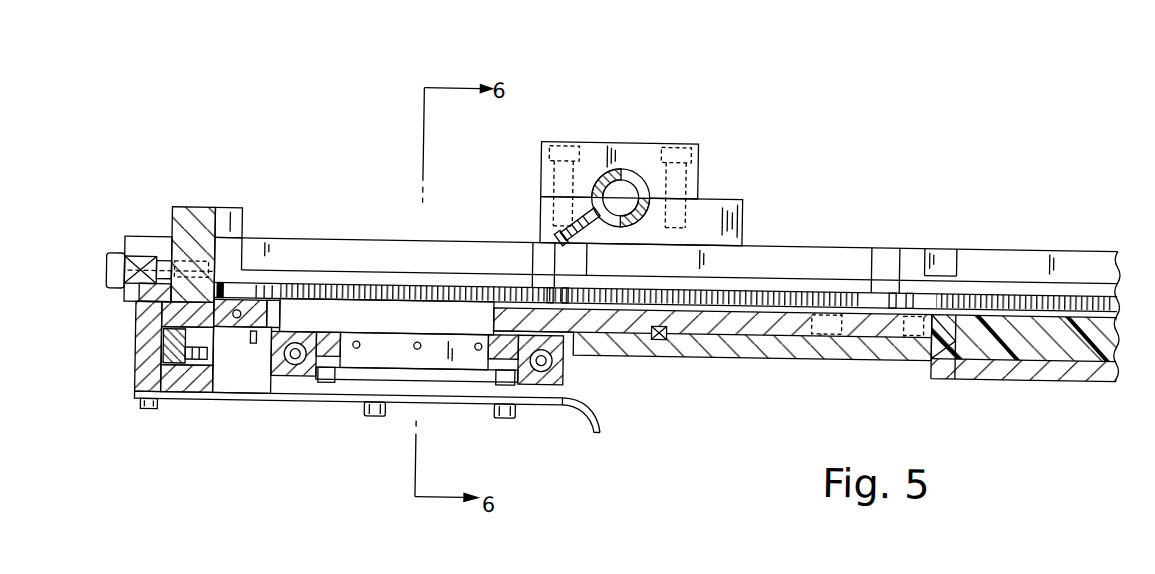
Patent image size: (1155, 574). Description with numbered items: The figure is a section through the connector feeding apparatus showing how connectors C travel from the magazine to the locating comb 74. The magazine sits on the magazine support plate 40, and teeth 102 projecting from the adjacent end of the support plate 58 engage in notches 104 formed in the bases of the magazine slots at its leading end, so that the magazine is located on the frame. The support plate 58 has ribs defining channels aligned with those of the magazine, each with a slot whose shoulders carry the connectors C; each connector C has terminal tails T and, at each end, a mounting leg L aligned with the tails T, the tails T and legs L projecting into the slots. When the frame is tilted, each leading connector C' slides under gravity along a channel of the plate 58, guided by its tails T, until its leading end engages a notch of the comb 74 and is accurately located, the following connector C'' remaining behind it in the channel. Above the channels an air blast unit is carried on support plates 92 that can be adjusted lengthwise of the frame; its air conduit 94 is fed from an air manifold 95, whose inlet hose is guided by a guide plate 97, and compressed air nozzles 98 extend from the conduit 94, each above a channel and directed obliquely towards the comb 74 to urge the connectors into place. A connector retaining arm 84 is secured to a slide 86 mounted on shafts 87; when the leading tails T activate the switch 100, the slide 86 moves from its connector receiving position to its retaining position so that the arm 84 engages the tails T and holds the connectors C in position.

The magazine support plate 40 is at (1047, 364).
The support plate 58 is at (772, 322).
The connector locating comb 74 is at (193, 212).
The connector retaining arm 84 is at (430, 326).
The slide 86 is at (378, 362).
The shafts 87 is at (297, 364).
The support plates 92 is at (697, 170).
The air conduit 94 is at (627, 164).
The air manifold 95 is at (188, 366).
The guide plate 97 is at (232, 401).
The compressed air nozzles 98 is at (566, 219).
The switch 100 is at (242, 359).
The teeth 102 is at (943, 299).
The notches 104 is at (960, 306).
The electrical connectors C is at (670, 290).
The leading connector C' is at (508, 247).
The carriage section C'' is at (799, 254).
The mounting leg L is at (221, 284).
The tail T is at (262, 295).